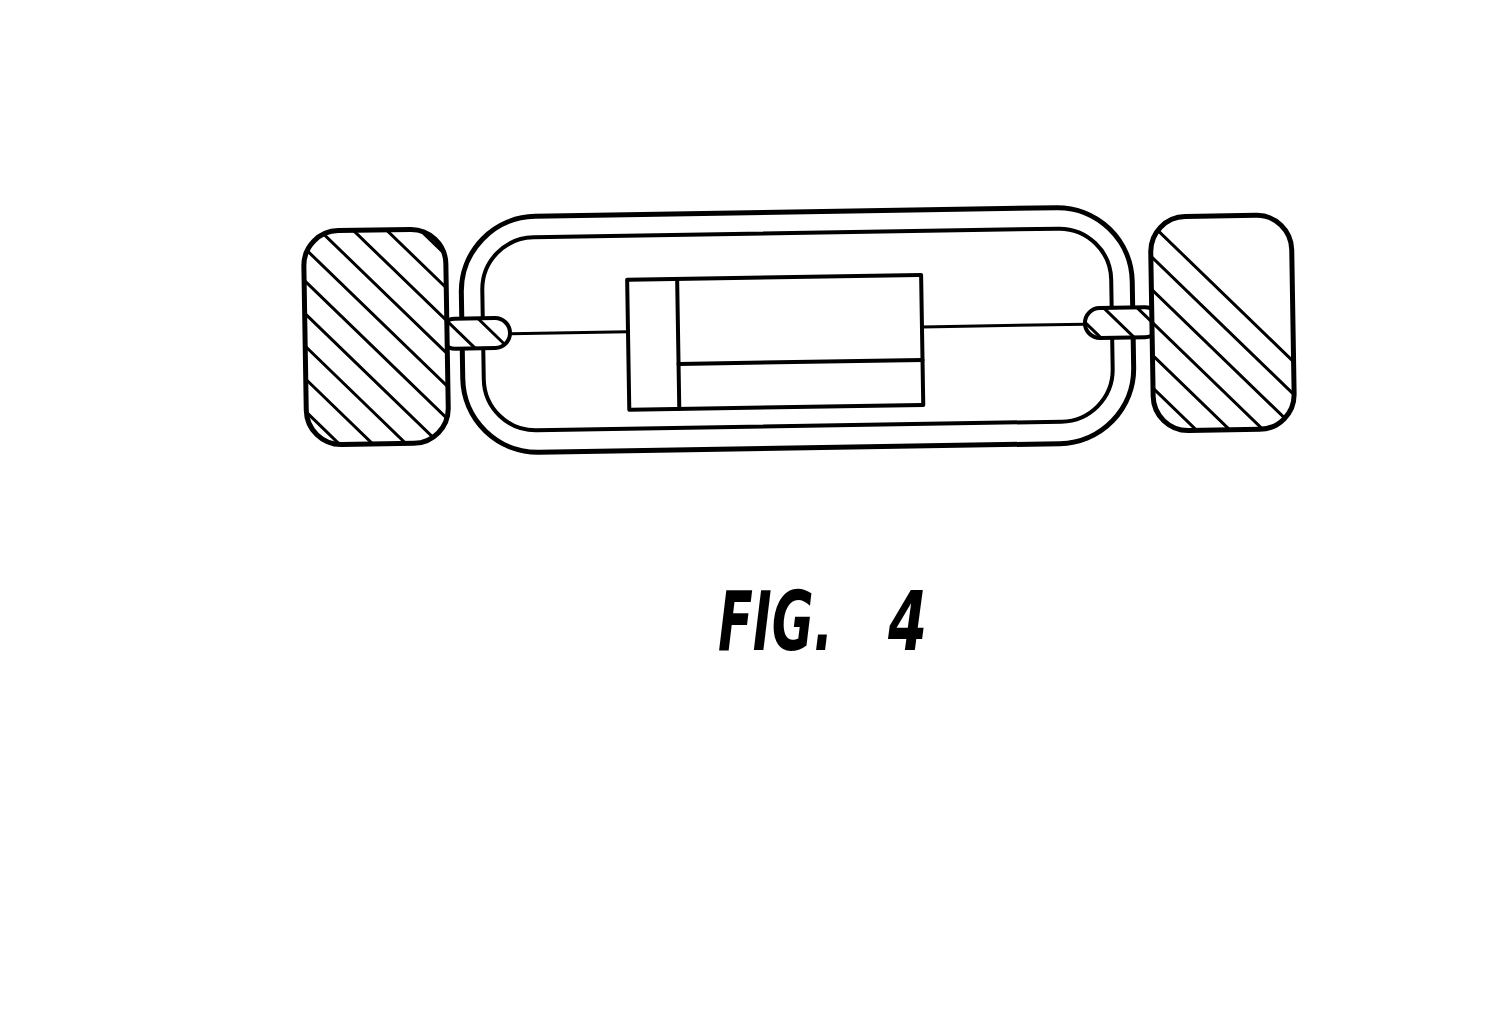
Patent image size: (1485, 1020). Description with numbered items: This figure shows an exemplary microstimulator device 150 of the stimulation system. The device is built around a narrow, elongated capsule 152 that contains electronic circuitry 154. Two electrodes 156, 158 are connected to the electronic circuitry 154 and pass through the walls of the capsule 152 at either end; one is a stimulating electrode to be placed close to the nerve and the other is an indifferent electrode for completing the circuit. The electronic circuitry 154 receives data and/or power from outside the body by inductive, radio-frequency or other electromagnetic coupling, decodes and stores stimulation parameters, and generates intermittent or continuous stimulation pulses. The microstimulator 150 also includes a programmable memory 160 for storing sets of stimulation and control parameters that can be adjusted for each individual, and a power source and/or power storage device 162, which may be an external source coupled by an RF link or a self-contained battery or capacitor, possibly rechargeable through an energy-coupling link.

The microstimulator device 150 is at (238, 196).
The capsule 152 is at (1042, 432).
The electronic circuitry 154 is at (890, 274).
The electrode 156 is at (305, 317).
The electrode 158 is at (1295, 315).
The programmable memory 160 is at (628, 357).
The power source and/or power storage device 162 is at (922, 384).